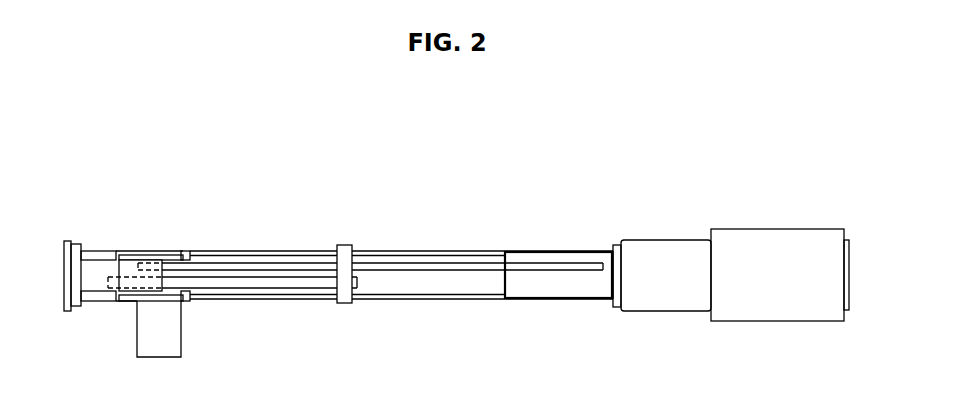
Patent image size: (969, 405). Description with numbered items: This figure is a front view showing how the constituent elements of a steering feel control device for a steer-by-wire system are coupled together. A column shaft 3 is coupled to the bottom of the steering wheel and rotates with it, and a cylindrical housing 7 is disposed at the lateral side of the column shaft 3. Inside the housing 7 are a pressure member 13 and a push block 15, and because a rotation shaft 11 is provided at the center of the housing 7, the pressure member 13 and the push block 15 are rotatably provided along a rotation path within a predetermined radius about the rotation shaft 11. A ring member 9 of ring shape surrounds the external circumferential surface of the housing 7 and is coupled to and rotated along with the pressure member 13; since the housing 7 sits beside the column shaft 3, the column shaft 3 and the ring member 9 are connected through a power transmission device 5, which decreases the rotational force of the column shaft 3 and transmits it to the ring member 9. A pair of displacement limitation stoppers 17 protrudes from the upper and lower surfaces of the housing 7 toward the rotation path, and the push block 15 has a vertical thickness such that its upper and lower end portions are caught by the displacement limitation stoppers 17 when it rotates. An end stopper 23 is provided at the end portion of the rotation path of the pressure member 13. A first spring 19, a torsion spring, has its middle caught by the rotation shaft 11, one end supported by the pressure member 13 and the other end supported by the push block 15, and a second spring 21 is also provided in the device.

The column shaft 3 is at (771, 229).
The power transmission device 5 is at (648, 236).
The housing 7 is at (288, 250).
The ring member 9 is at (75, 306).
The rotation shaft 11 is at (345, 305).
The pressure member 13 is at (97, 257).
The push block 15 is at (157, 255).
The displacement limitation stopper 17 is at (184, 255).
The first spring 19 is at (277, 284).
The second spring 21 is at (383, 262).
The end stopper 23 is at (528, 282).